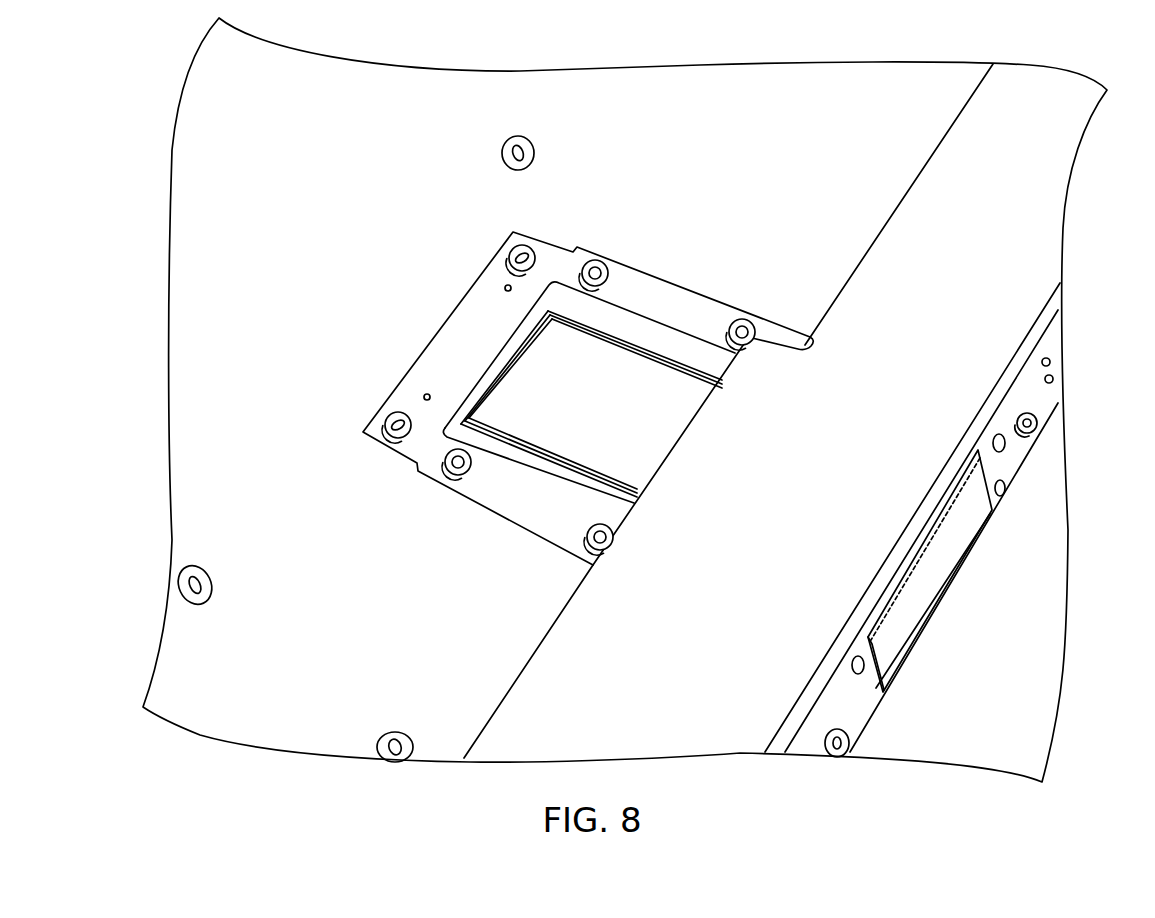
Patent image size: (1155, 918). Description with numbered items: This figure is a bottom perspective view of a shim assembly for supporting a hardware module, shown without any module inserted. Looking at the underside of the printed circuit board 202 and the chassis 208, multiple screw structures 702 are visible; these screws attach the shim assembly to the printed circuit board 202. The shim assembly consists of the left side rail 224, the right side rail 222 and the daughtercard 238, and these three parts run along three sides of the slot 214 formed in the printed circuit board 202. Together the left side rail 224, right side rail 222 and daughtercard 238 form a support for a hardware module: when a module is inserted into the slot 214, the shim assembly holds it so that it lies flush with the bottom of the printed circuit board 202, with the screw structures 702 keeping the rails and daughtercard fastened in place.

The printed circuit board 202 is at (709, 82).
The chassis 208 is at (1040, 243).
The slot 214 is at (670, 430).
The right side rail 222 is at (547, 472).
The left side rail 224 is at (657, 342).
The daughtercard 238 is at (513, 360).
The screw structures 702 is at (747, 322).